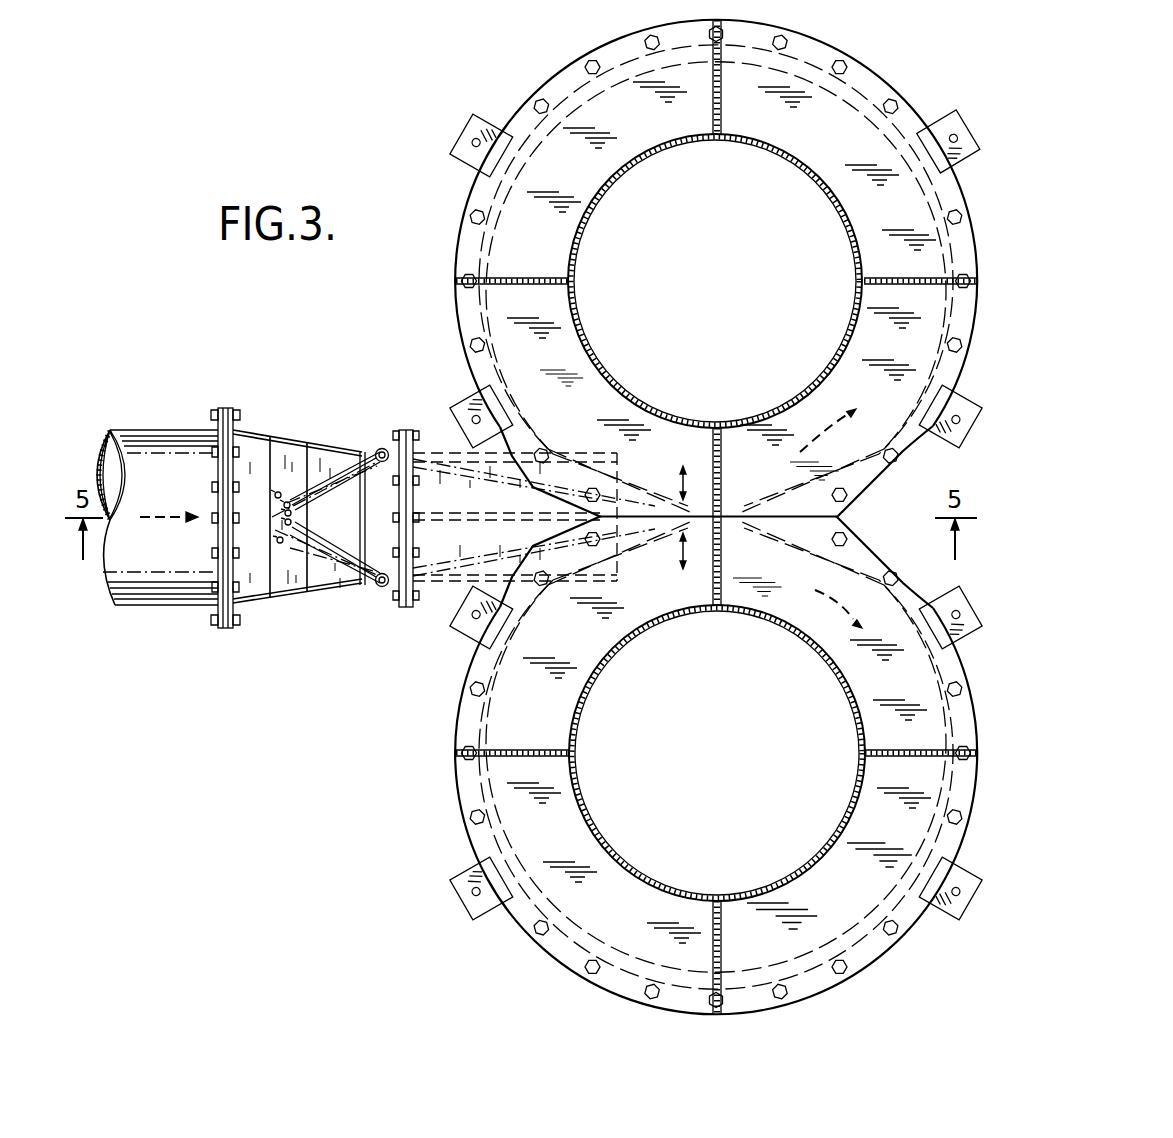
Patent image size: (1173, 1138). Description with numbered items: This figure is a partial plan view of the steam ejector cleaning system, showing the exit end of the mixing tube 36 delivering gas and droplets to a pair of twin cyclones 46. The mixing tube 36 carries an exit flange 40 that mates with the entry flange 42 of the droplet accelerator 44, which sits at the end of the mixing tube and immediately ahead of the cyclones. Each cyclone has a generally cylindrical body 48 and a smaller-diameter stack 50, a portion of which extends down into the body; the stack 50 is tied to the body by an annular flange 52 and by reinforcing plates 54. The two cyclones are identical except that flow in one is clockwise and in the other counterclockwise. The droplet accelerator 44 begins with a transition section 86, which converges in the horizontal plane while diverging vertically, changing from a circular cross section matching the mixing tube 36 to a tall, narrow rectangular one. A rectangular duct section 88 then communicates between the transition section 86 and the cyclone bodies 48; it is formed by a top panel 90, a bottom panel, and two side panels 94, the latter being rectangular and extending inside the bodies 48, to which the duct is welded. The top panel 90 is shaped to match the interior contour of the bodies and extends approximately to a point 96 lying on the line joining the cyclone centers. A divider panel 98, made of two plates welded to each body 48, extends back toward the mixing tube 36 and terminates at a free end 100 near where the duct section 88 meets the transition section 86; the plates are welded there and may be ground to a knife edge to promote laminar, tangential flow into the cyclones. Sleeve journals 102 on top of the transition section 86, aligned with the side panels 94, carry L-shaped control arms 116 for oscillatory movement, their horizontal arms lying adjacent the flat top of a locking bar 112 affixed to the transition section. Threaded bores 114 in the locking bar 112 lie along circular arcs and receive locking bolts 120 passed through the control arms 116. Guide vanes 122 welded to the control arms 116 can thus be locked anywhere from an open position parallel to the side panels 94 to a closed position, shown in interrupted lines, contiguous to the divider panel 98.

The mixing tube 36 is at (170, 601).
The exit flange 40 is at (220, 438).
The entry flange 42 is at (225, 408).
The droplet accelerator 44 is at (375, 434).
The twin cyclones 46 is at (500, 88).
The cylindrical body 48 is at (572, 95).
The stack 50 is at (590, 197).
The annular flange 52 is at (467, 783).
The reinforcing plates 54 is at (521, 279).
The transition section 86 is at (257, 426).
The rectangular duct section 88 is at (436, 440).
The top panel 90 is at (373, 494).
The side panels 94 is at (506, 447).
The point 96 is at (721, 514).
The divider panel 98 is at (462, 520).
The free end 100 is at (403, 517).
The sleeve journals 102 is at (383, 449).
The locking bar 112 is at (287, 591).
The threaded bores 114 is at (283, 533).
The control arms 116 is at (337, 488).
The locking bolts 120 is at (308, 523).
The guide vanes 122 is at (640, 498).